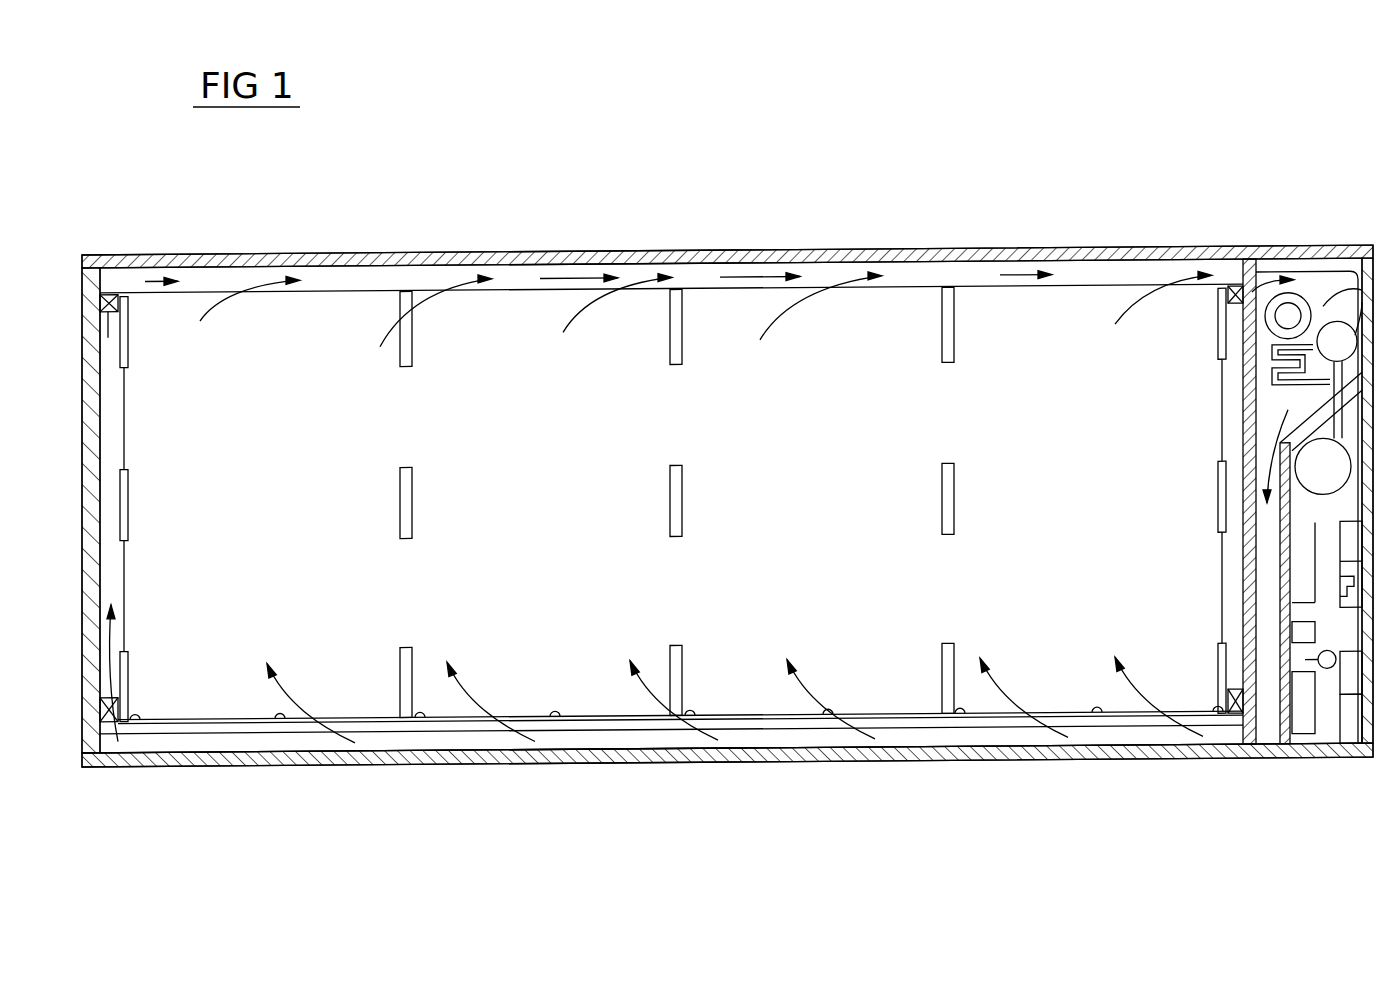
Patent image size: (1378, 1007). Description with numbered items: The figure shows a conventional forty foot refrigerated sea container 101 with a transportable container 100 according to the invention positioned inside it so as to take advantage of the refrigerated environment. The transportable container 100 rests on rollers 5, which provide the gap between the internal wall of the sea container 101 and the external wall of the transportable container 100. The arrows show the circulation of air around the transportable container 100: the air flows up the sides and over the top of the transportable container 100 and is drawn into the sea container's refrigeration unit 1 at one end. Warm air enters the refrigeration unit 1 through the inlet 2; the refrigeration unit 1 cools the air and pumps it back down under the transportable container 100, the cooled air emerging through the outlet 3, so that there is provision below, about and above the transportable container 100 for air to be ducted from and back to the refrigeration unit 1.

The refrigerated sea container 101 is at (685, 253).
The inlet 2 is at (1247, 267).
The refrigeration unit 1 is at (1320, 294).
The transportable container 100 is at (382, 692).
The rollers 5 is at (767, 740).
The outlet 3 is at (1250, 744).